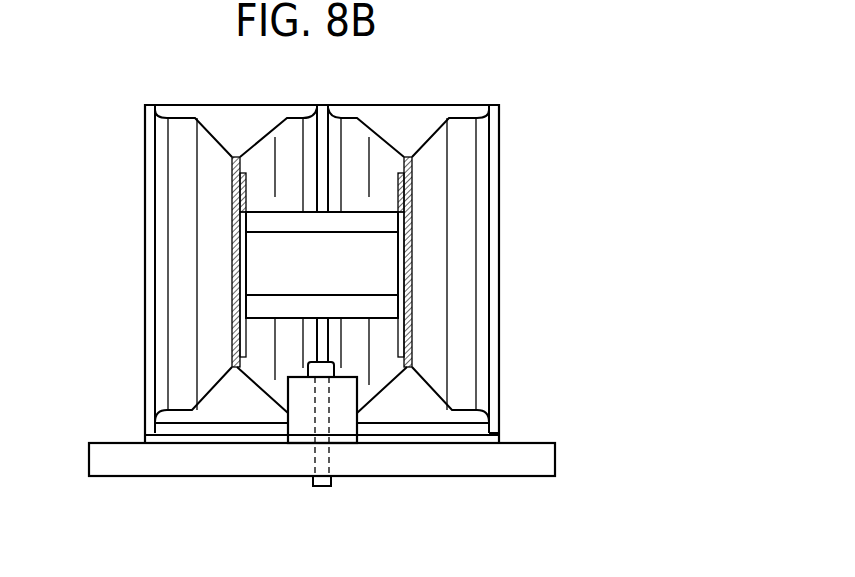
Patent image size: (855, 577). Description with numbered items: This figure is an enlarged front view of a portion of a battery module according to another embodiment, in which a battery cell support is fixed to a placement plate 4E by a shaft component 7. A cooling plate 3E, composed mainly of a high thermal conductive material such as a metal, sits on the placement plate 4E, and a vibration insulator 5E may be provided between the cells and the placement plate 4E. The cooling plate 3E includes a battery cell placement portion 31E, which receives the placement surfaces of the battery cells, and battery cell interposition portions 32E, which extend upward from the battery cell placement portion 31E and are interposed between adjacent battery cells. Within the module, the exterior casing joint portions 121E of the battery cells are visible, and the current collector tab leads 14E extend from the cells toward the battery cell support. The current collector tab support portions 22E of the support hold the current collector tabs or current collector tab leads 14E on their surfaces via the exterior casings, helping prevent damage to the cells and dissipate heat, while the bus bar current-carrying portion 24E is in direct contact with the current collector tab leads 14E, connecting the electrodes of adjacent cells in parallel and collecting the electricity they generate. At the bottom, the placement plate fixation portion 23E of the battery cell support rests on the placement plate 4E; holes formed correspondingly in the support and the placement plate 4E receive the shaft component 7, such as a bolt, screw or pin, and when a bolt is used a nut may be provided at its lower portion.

The cooling plate 3E is at (251, 274).
The battery cell interposition portion 32E is at (147, 340).
The battery cell placement portion 31E is at (276, 430).
The placement plate 4E is at (546, 460).
The vibration insulator 5E is at (492, 440).
The exterior casing joint portion 121E is at (212, 182).
The current collector tab lead 14E is at (238, 265).
The bus bar current-carrying portion 24E is at (268, 268).
The current collector tab support portion 22E is at (383, 303).
The placement plate fixation portion 23E is at (347, 440).
The shaft component 7 is at (307, 367).